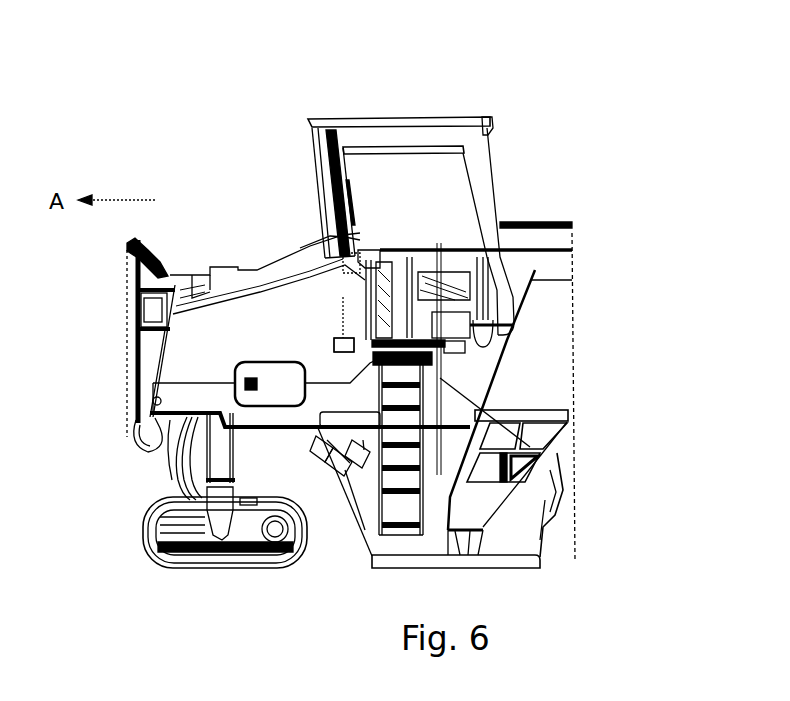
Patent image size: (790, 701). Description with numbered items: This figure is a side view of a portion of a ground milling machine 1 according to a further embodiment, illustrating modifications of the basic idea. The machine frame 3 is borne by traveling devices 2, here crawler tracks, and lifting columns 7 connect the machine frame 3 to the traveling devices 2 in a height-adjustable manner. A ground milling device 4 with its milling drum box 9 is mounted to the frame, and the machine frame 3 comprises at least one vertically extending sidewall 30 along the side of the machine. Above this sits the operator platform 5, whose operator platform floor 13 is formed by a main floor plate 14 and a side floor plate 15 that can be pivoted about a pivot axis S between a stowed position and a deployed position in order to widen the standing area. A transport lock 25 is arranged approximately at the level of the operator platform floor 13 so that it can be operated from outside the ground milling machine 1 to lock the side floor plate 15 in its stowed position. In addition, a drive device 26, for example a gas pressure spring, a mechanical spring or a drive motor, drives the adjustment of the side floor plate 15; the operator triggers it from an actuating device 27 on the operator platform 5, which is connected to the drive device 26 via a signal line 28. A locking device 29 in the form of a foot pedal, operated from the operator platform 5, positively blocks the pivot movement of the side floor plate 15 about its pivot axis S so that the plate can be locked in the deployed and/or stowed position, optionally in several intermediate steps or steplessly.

The ground milling machine 1 is at (563, 88).
The traveling devices 2 is at (177, 563).
The machine frame 3 is at (180, 367).
The ground milling device 4 is at (528, 542).
The operator platform 5 is at (407, 172).
The lifting columns 7 is at (538, 262).
The milling drum box 9 is at (537, 500).
The operator platform floor 13 is at (440, 355).
The main floor plate 14 is at (384, 300).
The side floor plate 15 is at (444, 286).
The transport lock 25 is at (470, 337).
The drive device 26 is at (336, 342).
The actuating device 27 is at (380, 248).
The signal line 28 is at (343, 297).
The locking device 29 is at (350, 477).
The sidewall 30 is at (562, 321).
The pivot axis S is at (530, 447).